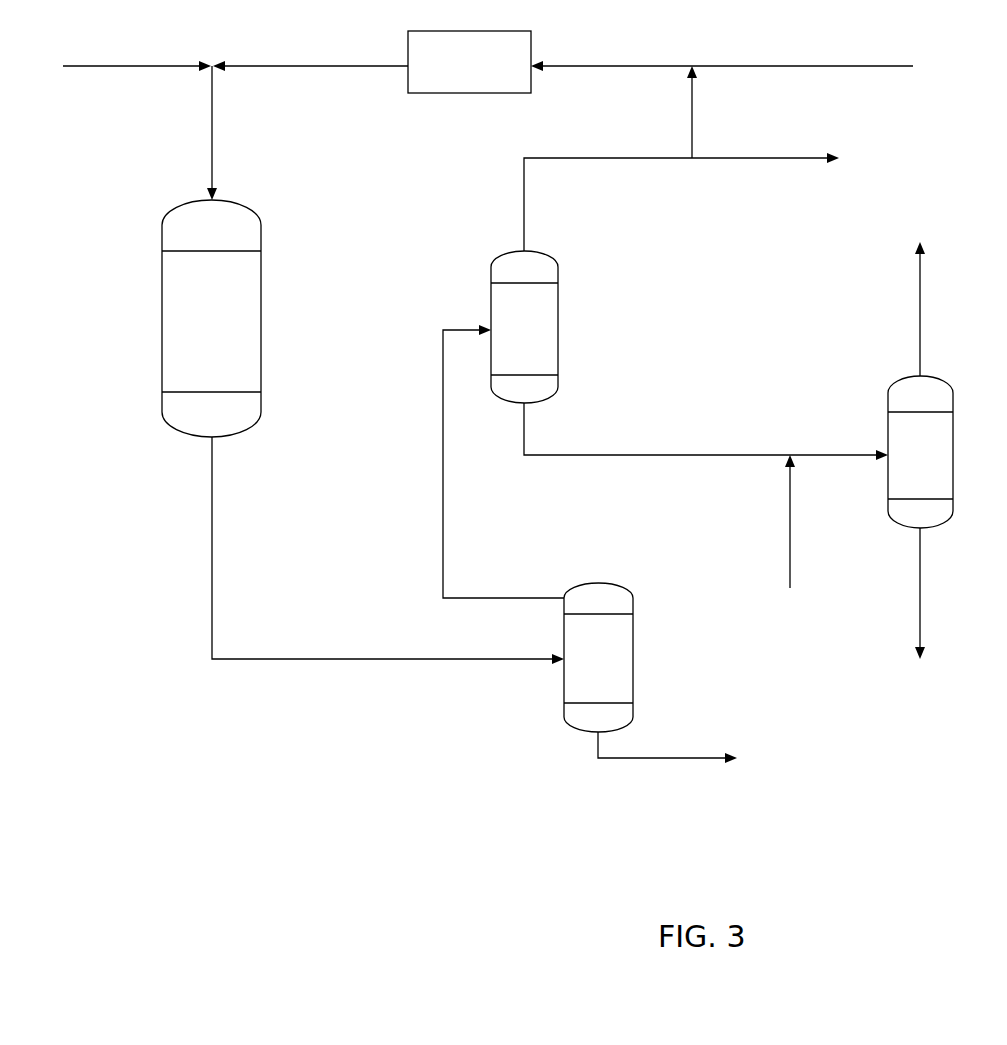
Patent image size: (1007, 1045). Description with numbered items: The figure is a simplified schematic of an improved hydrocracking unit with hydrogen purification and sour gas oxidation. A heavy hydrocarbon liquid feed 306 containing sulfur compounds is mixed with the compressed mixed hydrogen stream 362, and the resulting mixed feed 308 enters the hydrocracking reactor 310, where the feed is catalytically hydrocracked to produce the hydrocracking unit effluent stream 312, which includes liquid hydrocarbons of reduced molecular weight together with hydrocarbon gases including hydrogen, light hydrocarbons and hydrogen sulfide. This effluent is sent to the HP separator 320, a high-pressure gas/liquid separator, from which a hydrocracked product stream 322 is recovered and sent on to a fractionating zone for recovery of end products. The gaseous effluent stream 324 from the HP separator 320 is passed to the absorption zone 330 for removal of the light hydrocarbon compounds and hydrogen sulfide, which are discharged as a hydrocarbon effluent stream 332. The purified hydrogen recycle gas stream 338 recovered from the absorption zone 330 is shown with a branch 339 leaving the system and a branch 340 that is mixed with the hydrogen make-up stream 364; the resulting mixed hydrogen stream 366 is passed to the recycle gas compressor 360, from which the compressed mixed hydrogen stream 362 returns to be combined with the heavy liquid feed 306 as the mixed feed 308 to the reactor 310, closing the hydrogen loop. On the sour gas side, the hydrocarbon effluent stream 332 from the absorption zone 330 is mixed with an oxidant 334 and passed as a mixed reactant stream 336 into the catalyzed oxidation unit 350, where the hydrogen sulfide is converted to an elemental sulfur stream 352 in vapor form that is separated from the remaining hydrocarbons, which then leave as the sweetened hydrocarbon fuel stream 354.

The heavy hydrocarbon liquid feed 306 is at (137, 53).
The mixed feed 308 is at (236, 133).
The hydrocracking reactor 310 is at (187, 331).
The hydrocracking unit effluent stream 312 is at (388, 550).
The HP separator 320 is at (574, 671).
The hydrocracked product stream 322 is at (667, 768).
The gaseous effluent stream 324 is at (470, 461).
The absorption zone 330 is at (500, 339).
The hydrocarbon effluent stream 332 is at (657, 429).
The oxidant 334 is at (814, 521).
The mixed reactant stream 336 is at (839, 441).
The purified hydrogen recycle gas stream 338 is at (608, 190).
The net gas purge stream 339 is at (765, 146).
The recycle gas stream 340 is at (666, 112).
The catalyzed oxidation unit 350 is at (897, 473).
The elemental sulfur stream 352 is at (946, 593).
The sweetened hydrocarbon fuel stream 354 is at (944, 309).
The recycle gas compressor 360 is at (446, 76).
The compressed mixed hydrogen stream 362 is at (310, 53).
The hydrogen make-up stream 364 is at (802, 50).
The mixed hydrogen stream 366 is at (611, 53).